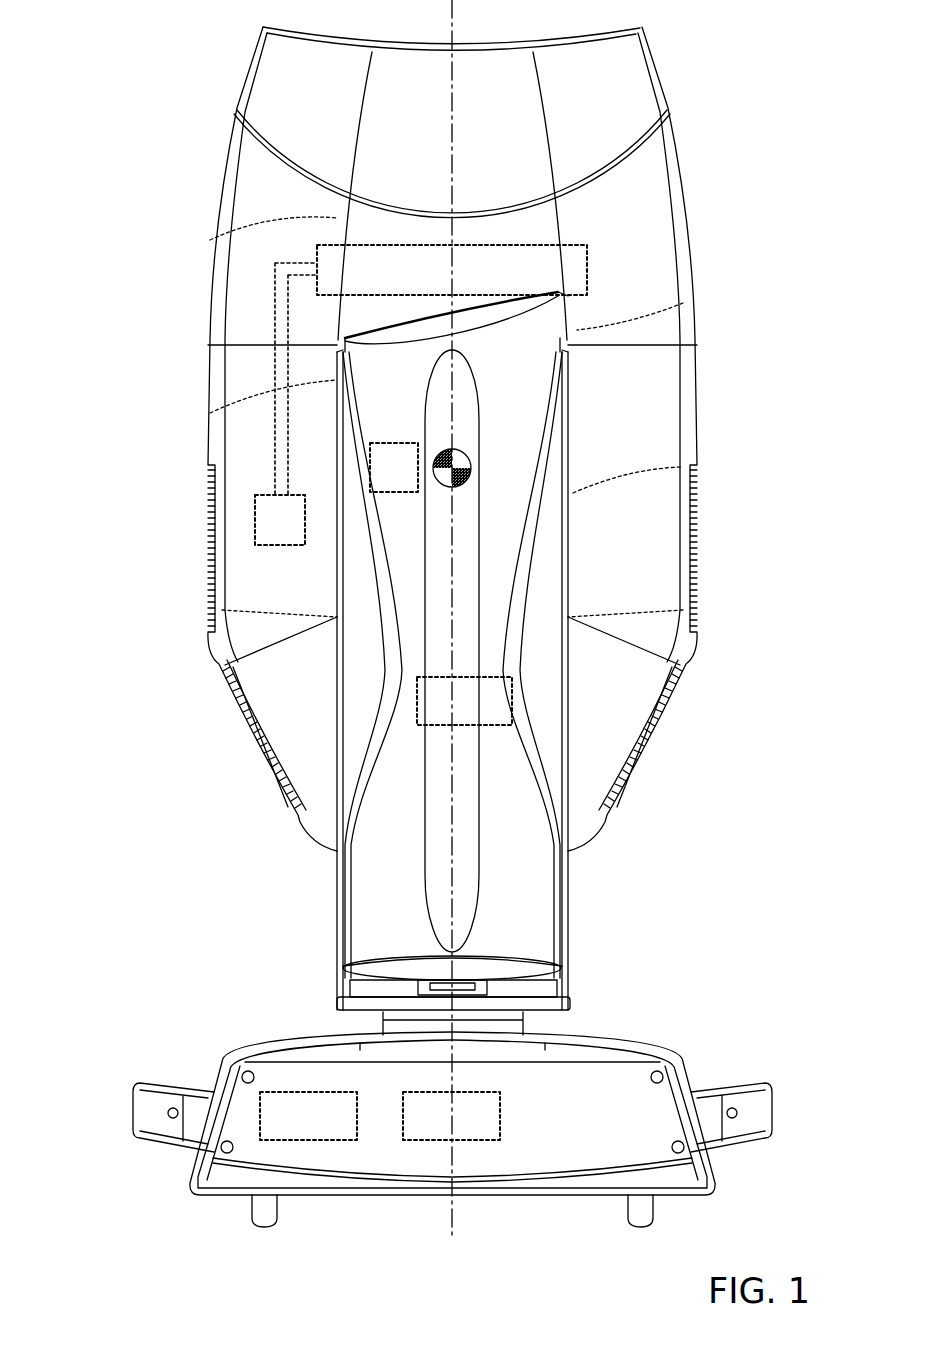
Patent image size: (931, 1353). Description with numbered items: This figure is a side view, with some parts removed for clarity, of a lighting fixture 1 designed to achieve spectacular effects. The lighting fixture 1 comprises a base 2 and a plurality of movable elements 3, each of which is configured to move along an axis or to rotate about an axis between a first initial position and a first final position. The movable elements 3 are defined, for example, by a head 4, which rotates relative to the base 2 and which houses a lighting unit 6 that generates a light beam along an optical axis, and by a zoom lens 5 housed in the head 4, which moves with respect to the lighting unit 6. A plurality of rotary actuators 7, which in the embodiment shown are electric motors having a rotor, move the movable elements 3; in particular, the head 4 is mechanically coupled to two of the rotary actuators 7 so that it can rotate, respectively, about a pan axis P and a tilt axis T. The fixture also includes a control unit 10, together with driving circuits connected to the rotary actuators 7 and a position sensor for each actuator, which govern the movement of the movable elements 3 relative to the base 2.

The lighting fixture 1 is at (135, 86).
The base 2 is at (635, 1077).
The movable elements 3 is at (735, 175).
The head 4 is at (262, 178).
The zoom lens 5 is at (540, 268).
The lighting unit 6 is at (495, 727).
The rotary actuators 7 is at (265, 545).
The control unit 10 is at (320, 1122).
The pan axis P is at (455, 72).
The tilt axis T is at (462, 455).